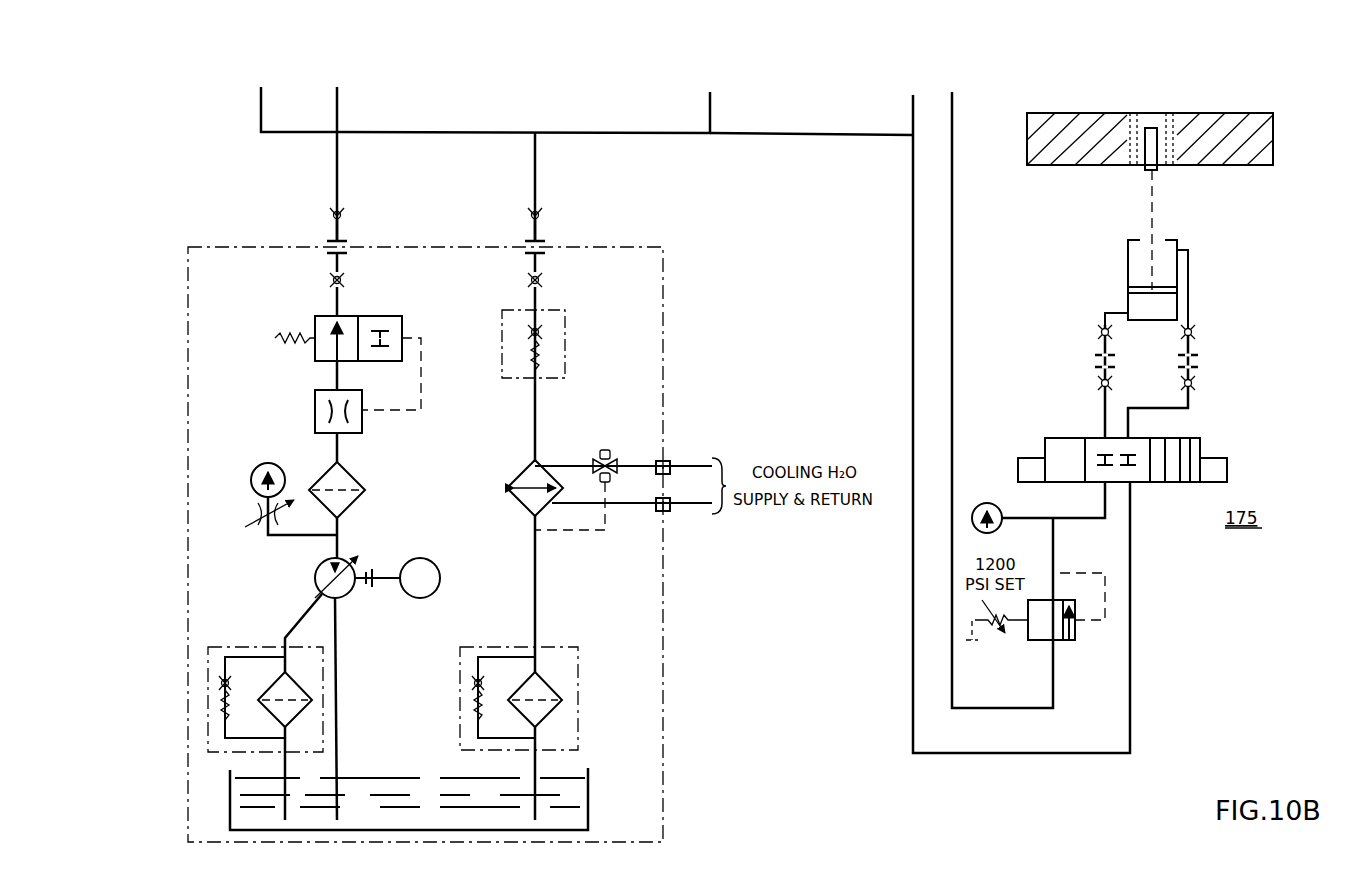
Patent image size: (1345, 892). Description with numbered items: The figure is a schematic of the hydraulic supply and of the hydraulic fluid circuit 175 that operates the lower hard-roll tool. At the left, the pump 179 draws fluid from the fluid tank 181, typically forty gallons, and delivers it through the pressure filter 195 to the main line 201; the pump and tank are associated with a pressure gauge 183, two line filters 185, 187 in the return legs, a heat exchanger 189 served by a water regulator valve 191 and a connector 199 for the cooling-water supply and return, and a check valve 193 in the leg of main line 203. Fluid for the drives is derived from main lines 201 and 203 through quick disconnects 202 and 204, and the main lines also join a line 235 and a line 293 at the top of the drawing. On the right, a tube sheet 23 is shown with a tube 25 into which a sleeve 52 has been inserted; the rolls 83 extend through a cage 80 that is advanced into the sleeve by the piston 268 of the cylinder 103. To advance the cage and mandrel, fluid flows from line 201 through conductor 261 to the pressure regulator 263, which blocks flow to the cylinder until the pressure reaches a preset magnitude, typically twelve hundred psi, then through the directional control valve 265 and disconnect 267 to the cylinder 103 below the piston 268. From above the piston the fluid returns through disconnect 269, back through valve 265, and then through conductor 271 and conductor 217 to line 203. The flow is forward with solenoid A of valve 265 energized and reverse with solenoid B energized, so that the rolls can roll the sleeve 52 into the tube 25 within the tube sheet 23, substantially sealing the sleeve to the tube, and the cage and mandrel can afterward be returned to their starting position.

The supply line 235 is at (261, 101).
The main line 201 is at (340, 112).
The line 293 is at (710, 106).
The conductor 217 is at (815, 133).
The main line 203 is at (535, 163).
The quick disconnect 202 is at (344, 244).
The quick disconnect 204 is at (525, 243).
The check valve 193 is at (545, 346).
The pressure filter 195 is at (354, 477).
The pressure gauge 183 is at (254, 492).
The heat exchanger 189 is at (524, 462).
The water regulator valve 191 is at (600, 460).
The connector 199 is at (666, 461).
The pump 179 is at (415, 560).
The line filter 185 is at (292, 685).
The line filter 187 is at (546, 685).
The fluid tank 181 is at (588, 796).
The conductor 261 is at (952, 132).
The conductor 271 is at (913, 180).
The tube sheet 23 is at (1040, 125).
The rolls 83 is at (1128, 138).
The sleeve 52 is at (1145, 160).
The cage 80 is at (1150, 175).
The tube 25 is at (1175, 148).
The air cylinder 103 is at (1188, 268).
The piston 268 is at (1128, 291).
The disconnect 267 is at (1095, 358).
The disconnect 269 is at (1222, 360).
The directional control valve 265 is at (1200, 448).
The hydraulic fluid circuit 175 is at (1122, 460).
The pressure regulator 263 is at (1072, 642).